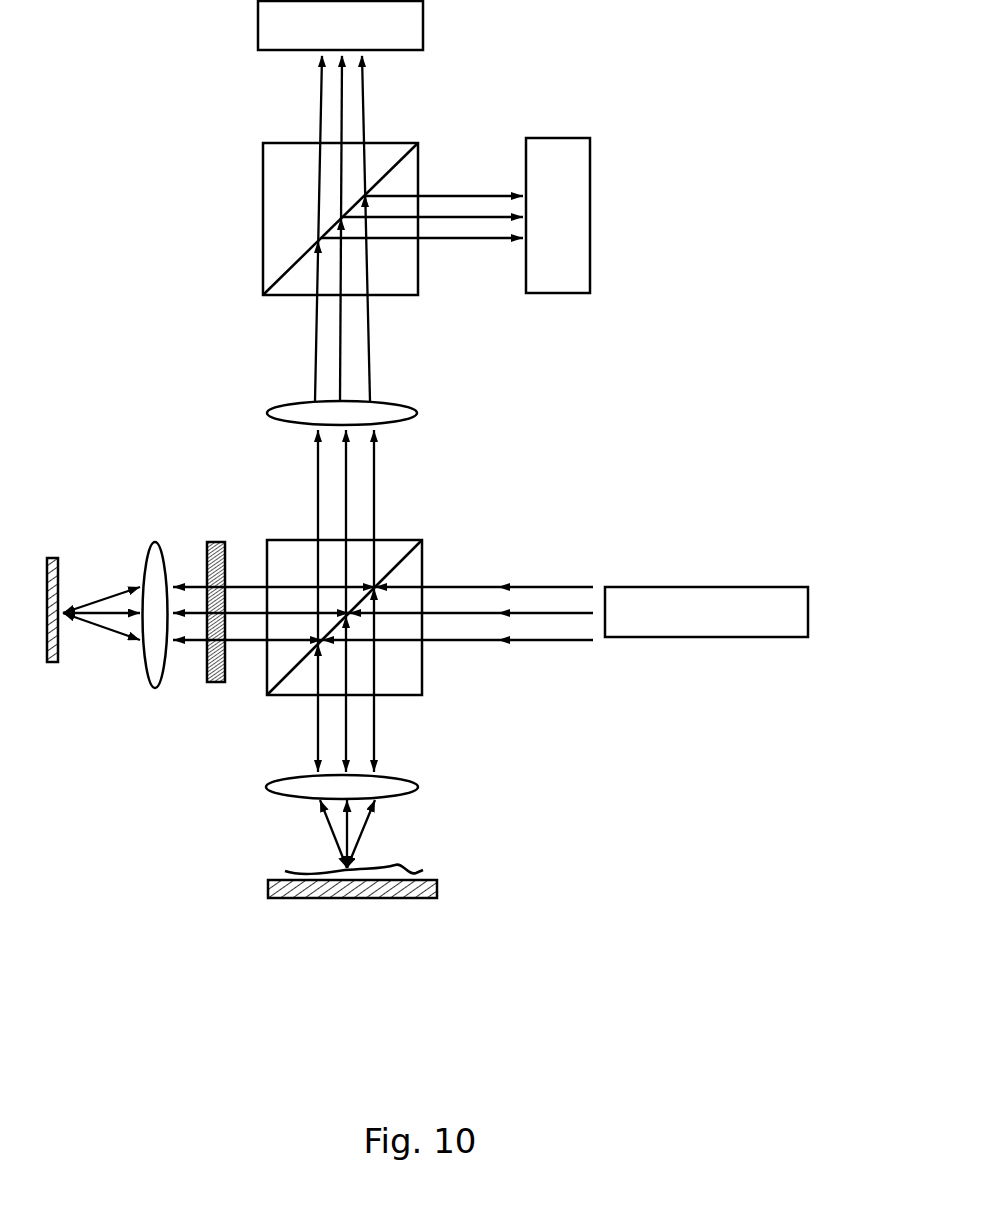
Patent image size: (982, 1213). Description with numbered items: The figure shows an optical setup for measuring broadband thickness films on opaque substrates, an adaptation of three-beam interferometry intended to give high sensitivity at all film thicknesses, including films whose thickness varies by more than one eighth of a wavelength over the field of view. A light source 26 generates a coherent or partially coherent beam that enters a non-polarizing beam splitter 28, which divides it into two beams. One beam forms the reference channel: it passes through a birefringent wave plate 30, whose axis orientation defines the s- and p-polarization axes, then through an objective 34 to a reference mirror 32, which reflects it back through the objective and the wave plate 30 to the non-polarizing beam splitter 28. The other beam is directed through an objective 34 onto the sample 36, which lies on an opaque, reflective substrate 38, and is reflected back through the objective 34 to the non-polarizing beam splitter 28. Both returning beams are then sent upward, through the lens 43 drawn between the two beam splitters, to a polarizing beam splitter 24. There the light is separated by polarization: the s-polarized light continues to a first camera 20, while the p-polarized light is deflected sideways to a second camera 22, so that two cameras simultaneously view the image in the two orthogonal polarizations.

The camera 20 is at (442, 27).
The camera 22 is at (609, 141).
The polarizing beam splitter 24 is at (424, 302).
The light source 26 is at (811, 577).
The non-polarizing beam splitter 28 is at (440, 701).
The birefringent wave plate 30 is at (217, 538).
The reference mirror 32 is at (53, 553).
The objective 34 is at (168, 704).
The sample 36 is at (410, 862).
The opaque substrate 38 is at (412, 908).
The lens 43 is at (262, 413).